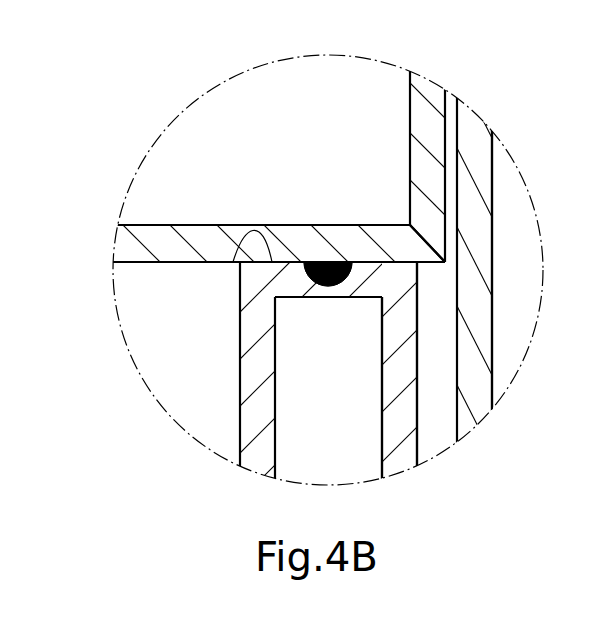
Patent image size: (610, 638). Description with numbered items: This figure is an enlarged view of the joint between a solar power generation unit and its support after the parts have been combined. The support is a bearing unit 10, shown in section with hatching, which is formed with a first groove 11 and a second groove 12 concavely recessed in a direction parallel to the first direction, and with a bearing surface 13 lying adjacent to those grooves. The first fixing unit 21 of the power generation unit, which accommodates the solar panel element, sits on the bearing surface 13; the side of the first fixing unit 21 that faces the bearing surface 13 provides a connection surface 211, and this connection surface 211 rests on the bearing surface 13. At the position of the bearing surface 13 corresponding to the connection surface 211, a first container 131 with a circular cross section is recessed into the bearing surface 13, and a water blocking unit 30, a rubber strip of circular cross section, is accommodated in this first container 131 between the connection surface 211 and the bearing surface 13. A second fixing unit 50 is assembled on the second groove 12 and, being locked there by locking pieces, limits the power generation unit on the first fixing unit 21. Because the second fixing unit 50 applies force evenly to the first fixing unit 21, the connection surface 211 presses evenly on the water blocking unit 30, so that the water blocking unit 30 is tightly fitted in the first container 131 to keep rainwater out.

The bearing unit 10 is at (412, 460).
The first groove 11 is at (187, 377).
The second groove 12 is at (438, 377).
The bearing surface 13 is at (234, 262).
The first container 131 is at (331, 284).
The first fixing unit 21 is at (432, 90).
The connection surface 211 is at (380, 265).
The water blocking unit 30 is at (324, 250).
The second fixing unit 50 is at (492, 181).